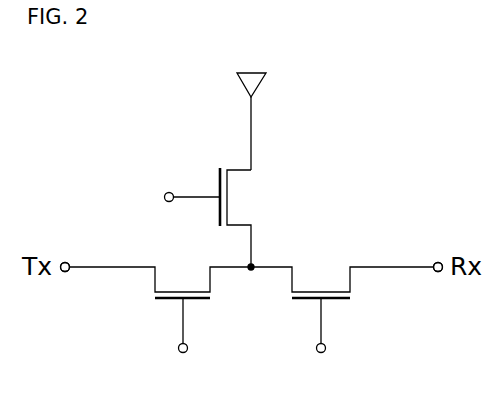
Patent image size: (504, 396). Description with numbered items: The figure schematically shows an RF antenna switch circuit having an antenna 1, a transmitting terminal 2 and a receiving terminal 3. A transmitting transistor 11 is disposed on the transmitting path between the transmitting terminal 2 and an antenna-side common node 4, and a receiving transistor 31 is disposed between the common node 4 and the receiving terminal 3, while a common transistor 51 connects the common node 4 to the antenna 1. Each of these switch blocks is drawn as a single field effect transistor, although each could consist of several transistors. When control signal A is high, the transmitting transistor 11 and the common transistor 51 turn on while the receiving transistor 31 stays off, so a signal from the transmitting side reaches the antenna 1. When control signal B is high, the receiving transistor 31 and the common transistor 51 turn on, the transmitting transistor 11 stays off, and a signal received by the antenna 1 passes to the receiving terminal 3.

The antenna 1 is at (262, 81).
The transmitting terminal 2 is at (65, 261).
The receiving terminal 3 is at (438, 261).
The antenna-side common node 4 is at (250, 272).
The transmitting transistor 11 is at (170, 305).
The receiving transistor 31 is at (333, 305).
The common transistor 51 is at (247, 200).